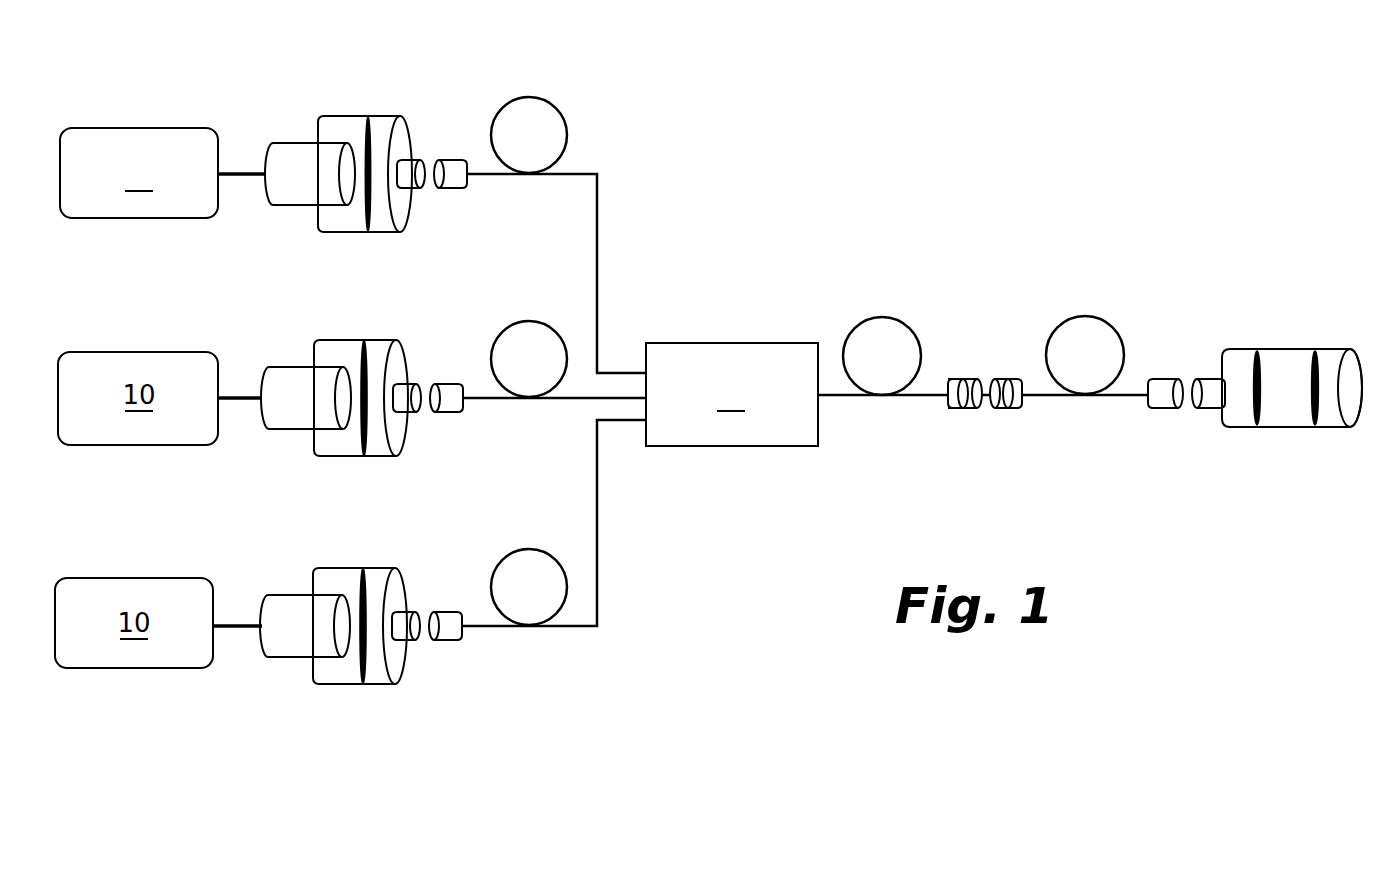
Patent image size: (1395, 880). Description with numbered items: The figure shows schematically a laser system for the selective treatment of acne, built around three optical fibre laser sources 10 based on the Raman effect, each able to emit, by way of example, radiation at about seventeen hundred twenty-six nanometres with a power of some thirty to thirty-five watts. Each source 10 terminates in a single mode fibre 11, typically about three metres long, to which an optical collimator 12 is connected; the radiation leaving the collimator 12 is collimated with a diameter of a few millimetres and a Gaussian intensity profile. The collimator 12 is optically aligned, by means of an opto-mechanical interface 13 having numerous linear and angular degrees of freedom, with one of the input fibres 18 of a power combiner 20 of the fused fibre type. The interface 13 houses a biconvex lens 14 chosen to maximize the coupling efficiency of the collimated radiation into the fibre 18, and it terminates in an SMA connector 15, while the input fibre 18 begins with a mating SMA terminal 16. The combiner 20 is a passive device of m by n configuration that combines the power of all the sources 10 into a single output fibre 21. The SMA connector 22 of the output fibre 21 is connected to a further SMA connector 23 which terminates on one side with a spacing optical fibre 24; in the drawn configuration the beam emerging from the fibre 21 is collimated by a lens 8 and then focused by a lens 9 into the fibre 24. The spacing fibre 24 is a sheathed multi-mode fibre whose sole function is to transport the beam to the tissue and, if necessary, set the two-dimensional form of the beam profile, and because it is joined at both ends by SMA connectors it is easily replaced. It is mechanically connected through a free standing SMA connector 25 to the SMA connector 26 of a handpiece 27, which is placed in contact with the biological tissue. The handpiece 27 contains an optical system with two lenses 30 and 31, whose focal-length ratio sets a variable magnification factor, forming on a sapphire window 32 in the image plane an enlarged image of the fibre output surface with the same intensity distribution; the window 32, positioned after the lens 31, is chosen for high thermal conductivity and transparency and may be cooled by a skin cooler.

The lens 8 is at (957, 382).
The lens 9 is at (1007, 390).
The optical fibre laser source 10 is at (139, 173).
The single mode fibre 11 is at (246, 170).
The optical collimator 12 is at (285, 187).
The opto-mechanical interface 13 is at (340, 122).
The biconvex lens 14 is at (370, 117).
The SMA connector 15 is at (421, 163).
The SMA terminal 16 is at (455, 191).
The input fibre 18 is at (530, 96).
The power combiner 20 is at (732, 394).
The output fibre 21 is at (880, 316).
The SMA connector 22 is at (955, 408).
The SMA connector 23 is at (1018, 407).
The spacing optical fibre 24 is at (1085, 316).
The free standing SMA connector 25 is at (1161, 402).
The SMA connector 26 is at (1205, 382).
The handpiece 27 is at (1283, 417).
The lens 30 is at (1255, 362).
The lens 31 is at (1315, 352).
The sapphire window 32 is at (1348, 392).